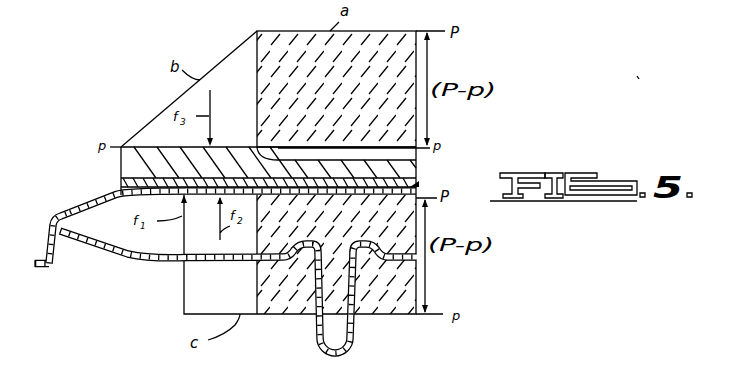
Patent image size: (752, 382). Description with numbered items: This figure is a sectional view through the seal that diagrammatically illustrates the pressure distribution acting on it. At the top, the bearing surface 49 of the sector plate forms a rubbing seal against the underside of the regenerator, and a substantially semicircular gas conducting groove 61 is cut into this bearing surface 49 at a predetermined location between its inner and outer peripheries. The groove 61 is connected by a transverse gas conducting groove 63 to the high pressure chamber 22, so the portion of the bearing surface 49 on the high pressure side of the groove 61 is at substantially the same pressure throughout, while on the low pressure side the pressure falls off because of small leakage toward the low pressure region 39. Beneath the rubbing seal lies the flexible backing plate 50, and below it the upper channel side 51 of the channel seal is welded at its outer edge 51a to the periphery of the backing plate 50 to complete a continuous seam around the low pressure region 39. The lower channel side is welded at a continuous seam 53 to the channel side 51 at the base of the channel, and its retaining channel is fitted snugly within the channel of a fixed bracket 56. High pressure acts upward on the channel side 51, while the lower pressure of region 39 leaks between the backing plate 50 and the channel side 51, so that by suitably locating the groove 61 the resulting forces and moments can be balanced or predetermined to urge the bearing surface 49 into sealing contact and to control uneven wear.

The chamber 22 is at (424, 163).
The low pressure region 39 is at (100, 165).
The bearing surface 49 is at (130, 162).
The flexible backing plate 50 is at (79, 222).
The upper channel side 51 is at (351, 194).
The outer edge weld 51a is at (416, 185).
The continuous seam 53 is at (58, 264).
The fixed bracket 56 is at (143, 261).
The gas conducting groove 61 is at (268, 152).
The transverse gas conducting groove 63 is at (340, 154).